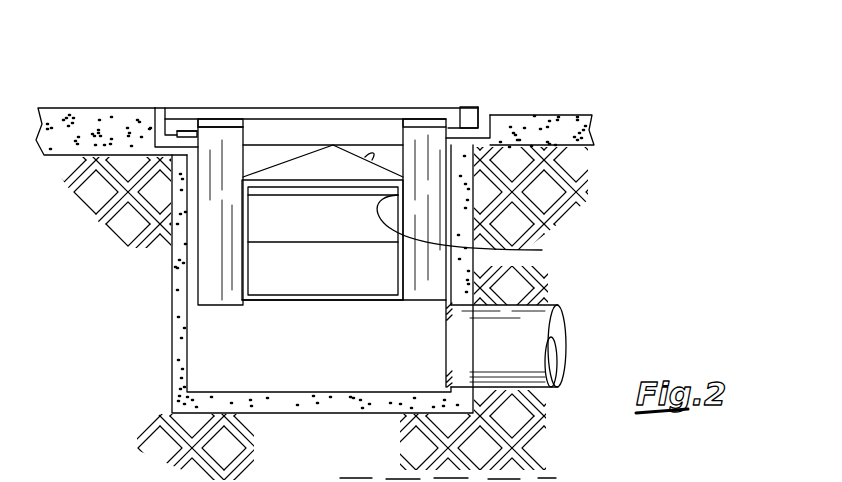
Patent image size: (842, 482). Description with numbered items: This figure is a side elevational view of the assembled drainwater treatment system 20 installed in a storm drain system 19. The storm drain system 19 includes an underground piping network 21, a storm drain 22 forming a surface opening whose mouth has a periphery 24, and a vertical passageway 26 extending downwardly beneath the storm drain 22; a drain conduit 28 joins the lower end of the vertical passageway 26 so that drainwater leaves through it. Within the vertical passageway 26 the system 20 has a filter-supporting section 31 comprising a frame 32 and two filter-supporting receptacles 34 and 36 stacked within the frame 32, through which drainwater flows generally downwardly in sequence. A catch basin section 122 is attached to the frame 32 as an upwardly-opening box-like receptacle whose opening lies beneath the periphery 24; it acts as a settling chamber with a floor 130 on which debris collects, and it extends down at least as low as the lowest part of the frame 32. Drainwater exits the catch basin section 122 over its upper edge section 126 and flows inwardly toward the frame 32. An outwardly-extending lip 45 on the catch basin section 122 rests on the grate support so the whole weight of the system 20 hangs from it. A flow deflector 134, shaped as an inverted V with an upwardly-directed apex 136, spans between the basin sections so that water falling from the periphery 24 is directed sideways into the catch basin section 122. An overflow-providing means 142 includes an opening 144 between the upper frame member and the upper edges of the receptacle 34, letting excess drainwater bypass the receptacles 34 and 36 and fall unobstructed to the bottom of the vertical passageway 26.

The storm drain system 19 is at (143, 78).
The drainwater treatment system 20 is at (414, 88).
The underground piping network 21 is at (548, 390).
The storm drain 22 is at (312, 107).
The periphery 24 is at (483, 103).
The vertical passageway 26 is at (188, 376).
The drain conduit 28 is at (552, 304).
The filter-supporting section 31 is at (348, 301).
The frame 32 is at (295, 301).
The filter-supporting receptacle 34 is at (300, 234).
The filter-supporting receptacle 36 is at (333, 288).
The outwardly-extending lip 45 is at (188, 132).
The catch basin section 122 is at (222, 131).
The upper edge section 126 is at (408, 127).
The floor 130 is at (220, 306).
The flow deflector 134 is at (366, 157).
The apex 136 is at (331, 144).
The overflow-providing means 142 is at (279, 98).
The opening 144 is at (482, 229).